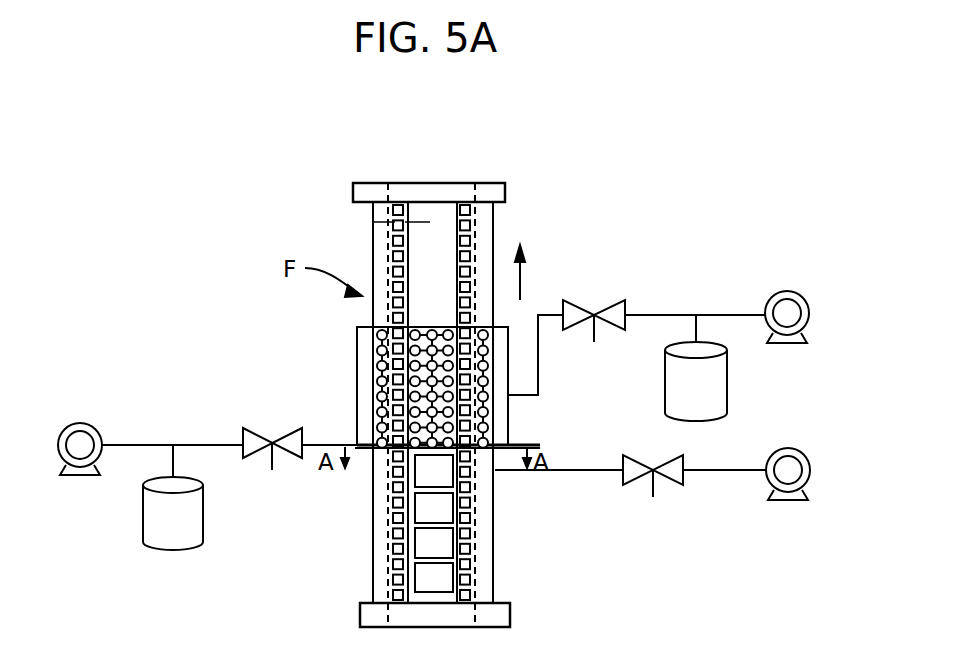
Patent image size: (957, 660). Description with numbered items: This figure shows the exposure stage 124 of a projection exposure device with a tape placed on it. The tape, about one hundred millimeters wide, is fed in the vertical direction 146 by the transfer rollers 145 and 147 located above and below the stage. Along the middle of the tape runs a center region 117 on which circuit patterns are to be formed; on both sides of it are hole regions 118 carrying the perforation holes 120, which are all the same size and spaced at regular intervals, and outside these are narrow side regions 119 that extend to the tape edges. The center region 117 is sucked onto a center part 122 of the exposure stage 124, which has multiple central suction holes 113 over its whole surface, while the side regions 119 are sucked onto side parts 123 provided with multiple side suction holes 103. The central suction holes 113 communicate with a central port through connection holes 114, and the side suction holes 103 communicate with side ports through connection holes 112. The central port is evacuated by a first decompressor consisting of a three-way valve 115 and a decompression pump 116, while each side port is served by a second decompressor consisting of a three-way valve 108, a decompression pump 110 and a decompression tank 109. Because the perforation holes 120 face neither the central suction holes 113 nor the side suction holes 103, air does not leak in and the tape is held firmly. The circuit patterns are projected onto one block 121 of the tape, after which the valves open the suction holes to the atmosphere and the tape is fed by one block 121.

The side suction holes 103 is at (377, 404).
The three-way valve 108 is at (292, 448).
The decompression tank 109 is at (203, 520).
The decompression pump 110 is at (96, 428).
The connection holes 112 is at (368, 340).
The central suction holes 113 is at (398, 334).
The connection holes 114 is at (433, 420).
The three-way valve 115 is at (672, 475).
The decompression pump 116 is at (805, 455).
The center region 117 is at (421, 218).
The hole regions 118 is at (393, 205).
The side regions 119 is at (380, 208).
The perforation holes 120 is at (375, 221).
The block 121 is at (445, 548).
The center part 122 is at (416, 487).
The side parts 123 is at (380, 452).
The exposure stage 124 is at (340, 376).
The transfer roller 145 is at (505, 190).
The vertical direction 146 is at (520, 275).
The transfer roller 147 is at (512, 612).